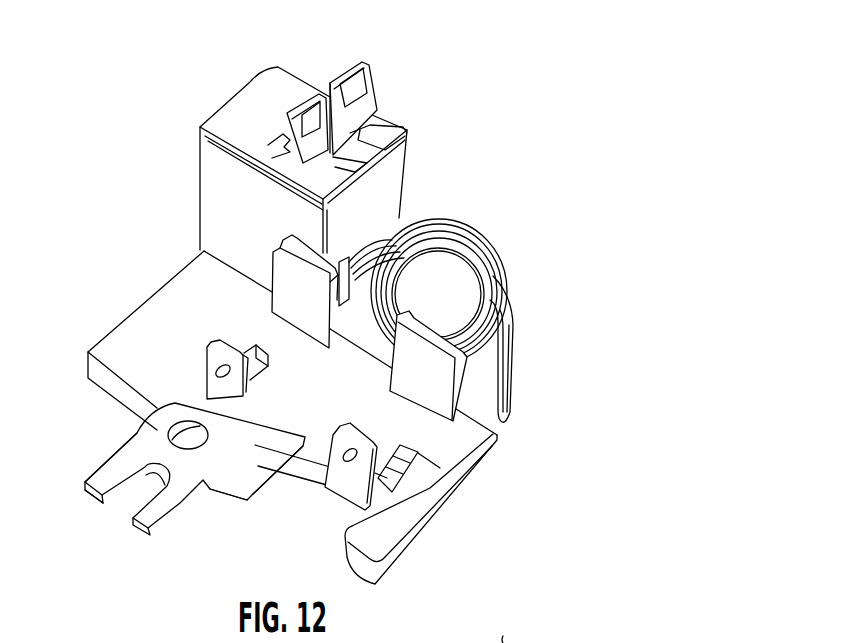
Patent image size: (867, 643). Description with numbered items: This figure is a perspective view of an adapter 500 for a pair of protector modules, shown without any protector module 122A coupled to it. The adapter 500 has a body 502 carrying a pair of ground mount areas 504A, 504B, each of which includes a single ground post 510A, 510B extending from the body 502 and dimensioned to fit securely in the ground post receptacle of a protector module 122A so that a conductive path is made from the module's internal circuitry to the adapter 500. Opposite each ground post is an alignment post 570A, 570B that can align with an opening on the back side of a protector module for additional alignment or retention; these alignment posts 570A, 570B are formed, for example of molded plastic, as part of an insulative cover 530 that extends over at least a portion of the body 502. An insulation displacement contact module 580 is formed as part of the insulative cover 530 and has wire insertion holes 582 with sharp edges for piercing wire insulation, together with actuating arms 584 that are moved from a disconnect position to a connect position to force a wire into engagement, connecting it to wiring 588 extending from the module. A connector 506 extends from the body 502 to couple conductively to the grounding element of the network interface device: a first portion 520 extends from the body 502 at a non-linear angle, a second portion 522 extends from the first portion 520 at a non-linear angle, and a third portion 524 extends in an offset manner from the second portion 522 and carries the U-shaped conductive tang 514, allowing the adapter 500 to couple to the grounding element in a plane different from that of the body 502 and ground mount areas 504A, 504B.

The adapter 500 is at (310, 296).
The body 502 is at (415, 462).
The ground mount area 504A is at (198, 300).
The ground mount area 504B is at (391, 422).
The connector 506 is at (165, 462).
The ground post 510A is at (200, 353).
The ground post 510B is at (326, 488).
The U-shaped conductive tang 514 is at (160, 522).
The first portion 520 is at (300, 478).
The second portion 522 is at (232, 472).
The third portion 524 is at (137, 427).
The insulative cover 530 is at (423, 510).
The alignment post 570A is at (300, 285).
The alignment post 570B is at (433, 370).
The insulation displacement contact (IDC) module 580 is at (258, 97).
The wire insertion hole 582 is at (330, 142).
The actuating arm 584 is at (348, 78).
The wiring 588 is at (493, 267).
The protector module 122A is at (502, 624).